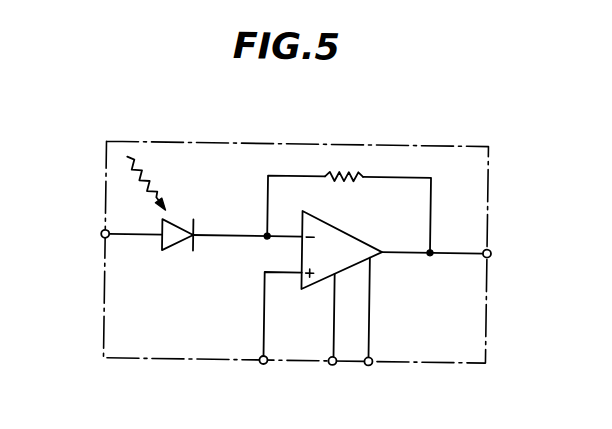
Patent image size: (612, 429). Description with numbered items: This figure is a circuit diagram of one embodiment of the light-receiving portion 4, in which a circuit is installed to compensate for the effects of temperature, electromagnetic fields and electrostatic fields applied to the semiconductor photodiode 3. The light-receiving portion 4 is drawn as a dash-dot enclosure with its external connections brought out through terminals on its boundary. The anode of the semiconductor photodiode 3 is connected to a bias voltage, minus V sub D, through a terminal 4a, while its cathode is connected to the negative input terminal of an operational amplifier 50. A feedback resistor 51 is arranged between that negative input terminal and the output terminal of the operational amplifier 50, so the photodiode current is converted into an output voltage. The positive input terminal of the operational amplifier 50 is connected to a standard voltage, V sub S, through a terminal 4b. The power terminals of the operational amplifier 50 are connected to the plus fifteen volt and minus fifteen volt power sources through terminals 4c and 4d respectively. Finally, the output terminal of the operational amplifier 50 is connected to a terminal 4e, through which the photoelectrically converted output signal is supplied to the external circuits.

The semiconductor photodiode 3 is at (170, 246).
The light-receiving portion 4 is at (462, 144).
The terminal 4a is at (103, 242).
The terminal 4b is at (261, 356).
The terminal 4c is at (331, 356).
The terminal 4d is at (372, 356).
The terminal 4e is at (491, 250).
The operational amplifier 50 is at (352, 248).
The feedback resistor 51 is at (353, 172).